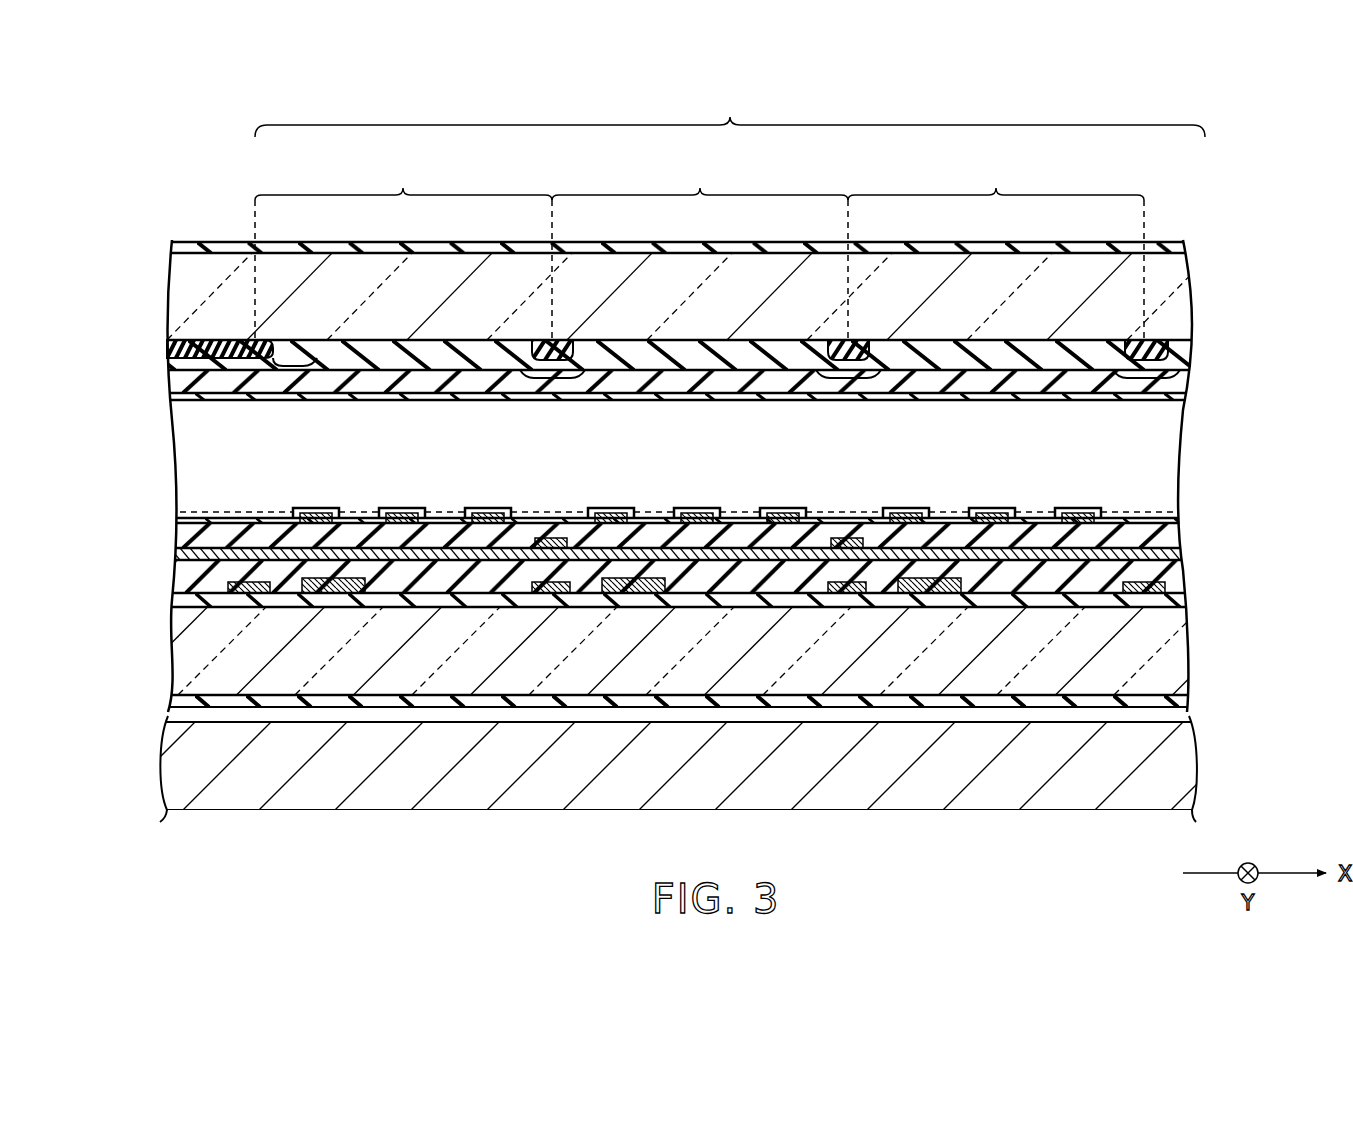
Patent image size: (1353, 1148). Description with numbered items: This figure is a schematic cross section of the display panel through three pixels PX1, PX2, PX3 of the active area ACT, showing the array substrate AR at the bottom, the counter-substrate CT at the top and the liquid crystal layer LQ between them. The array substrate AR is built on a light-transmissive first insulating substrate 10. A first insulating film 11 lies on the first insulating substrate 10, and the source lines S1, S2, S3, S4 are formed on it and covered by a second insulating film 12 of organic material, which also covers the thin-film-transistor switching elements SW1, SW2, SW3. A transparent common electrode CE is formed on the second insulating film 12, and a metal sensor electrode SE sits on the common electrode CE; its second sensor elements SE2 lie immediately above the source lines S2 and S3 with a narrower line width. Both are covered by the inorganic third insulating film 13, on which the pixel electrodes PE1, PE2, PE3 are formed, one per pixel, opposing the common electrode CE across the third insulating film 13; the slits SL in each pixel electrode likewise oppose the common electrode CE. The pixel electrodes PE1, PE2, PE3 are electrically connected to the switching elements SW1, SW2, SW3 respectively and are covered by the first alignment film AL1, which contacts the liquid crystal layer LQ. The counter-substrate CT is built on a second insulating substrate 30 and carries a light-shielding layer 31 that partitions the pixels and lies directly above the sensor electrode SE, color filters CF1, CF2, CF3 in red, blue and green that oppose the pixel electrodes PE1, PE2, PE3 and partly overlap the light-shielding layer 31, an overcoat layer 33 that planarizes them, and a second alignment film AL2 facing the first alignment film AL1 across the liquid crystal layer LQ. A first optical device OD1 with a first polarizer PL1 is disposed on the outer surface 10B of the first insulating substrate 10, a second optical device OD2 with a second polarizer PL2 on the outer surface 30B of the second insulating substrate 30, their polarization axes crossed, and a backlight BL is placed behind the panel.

The active area ACT is at (730, 113).
The pixel PX1 is at (403, 249).
The pixel PX2 is at (700, 249).
The pixel PX3 is at (996, 249).
The counter-substrate CT is at (145, 290).
The array substrate AR is at (145, 645).
The second insulating substrate 30 is at (1173, 305).
The outer surface of second insulating substrate 30B is at (927, 242).
The light-shielding layer 31 is at (172, 350).
The overcoat layer 33 is at (1168, 380).
The color filter CF1 is at (425, 357).
The color filter CF2 is at (737, 357).
The color filter CF3 is at (1092, 357).
The second alignment film AL2 is at (1170, 398).
The first alignment film AL1 is at (1170, 518).
The liquid crystal layer LQ is at (1170, 460).
The second optical device OD2 is at (705, 223).
The second polarizer PL2 is at (1180, 250).
The first optical device OD1 is at (744, 724).
The first polarizer PL1 is at (1143, 703).
The first insulating substrate 10 is at (1170, 648).
The outer surface of first insulating substrate 10B is at (1018, 705).
The first insulating film 11 is at (1170, 600).
The second insulating film 12 is at (1170, 577).
The third insulating film 13 is at (1170, 530).
The common electrode CE is at (1170, 553).
The pixel electrode PE1 is at (486, 508).
The pixel electrode PE2 is at (783, 508).
The pixel electrode PE3 is at (1079, 508).
The slit SL is at (360, 512).
The source line S1 is at (245, 582).
The source line S2 is at (548, 582).
The source line S3 is at (845, 582).
The source line S4 is at (1143, 582).
The second sensor element SE2 is at (728, 491).
The sensor electrode SE is at (897, 480).
The switching element SW1 is at (330, 593).
The switching element SW2 is at (633, 593).
The switching element SW3 is at (932, 593).
The backlight BL is at (1170, 790).